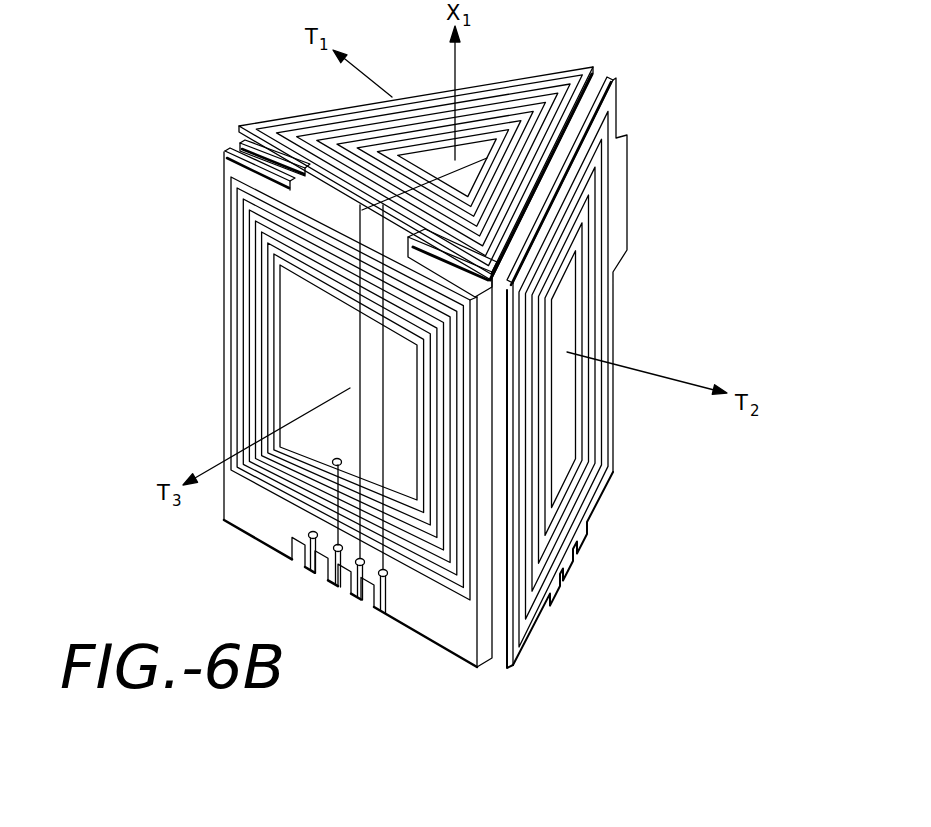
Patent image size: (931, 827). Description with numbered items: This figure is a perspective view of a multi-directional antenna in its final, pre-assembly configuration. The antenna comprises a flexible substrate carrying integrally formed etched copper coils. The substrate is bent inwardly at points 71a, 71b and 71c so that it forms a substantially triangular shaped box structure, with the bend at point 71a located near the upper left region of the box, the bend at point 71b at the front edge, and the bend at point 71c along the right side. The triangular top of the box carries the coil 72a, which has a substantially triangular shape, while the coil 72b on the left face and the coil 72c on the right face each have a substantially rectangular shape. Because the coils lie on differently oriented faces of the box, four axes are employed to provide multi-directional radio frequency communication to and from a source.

The bend point 71a is at (320, 202).
The bend point 71b is at (493, 480).
The bend point 71c is at (627, 213).
The etched copper coil 72a is at (554, 81).
The etched copper coil 72b is at (232, 330).
The etched copper coil 72c is at (603, 334).